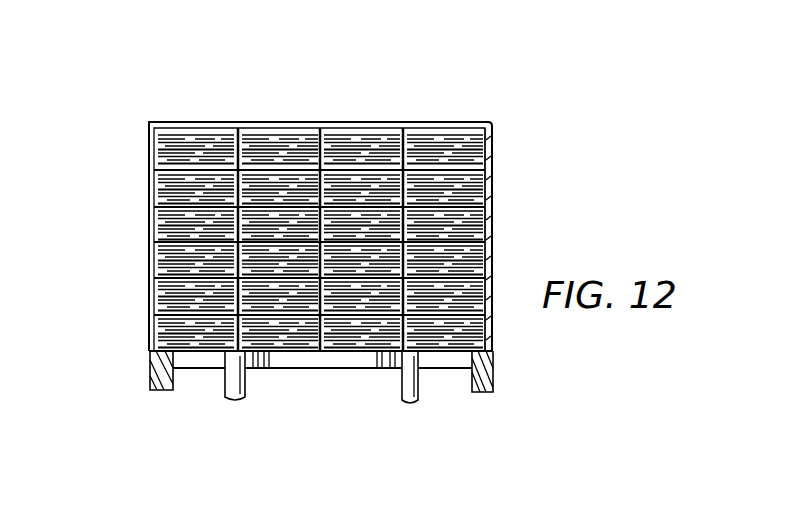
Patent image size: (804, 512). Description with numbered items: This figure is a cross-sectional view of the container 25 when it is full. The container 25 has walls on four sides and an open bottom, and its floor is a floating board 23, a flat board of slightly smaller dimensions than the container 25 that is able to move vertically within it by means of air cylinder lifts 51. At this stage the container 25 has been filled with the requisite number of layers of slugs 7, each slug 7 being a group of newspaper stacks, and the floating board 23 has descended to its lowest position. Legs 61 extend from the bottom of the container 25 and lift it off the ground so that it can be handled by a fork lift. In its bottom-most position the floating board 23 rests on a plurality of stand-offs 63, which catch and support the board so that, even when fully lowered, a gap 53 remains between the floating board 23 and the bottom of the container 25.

The slug 7 is at (442, 130).
The container 25 is at (496, 188).
The floating board 23 is at (198, 352).
The air cylinder lift 51 is at (401, 390).
The gap 53 is at (440, 360).
The leg 61 is at (495, 382).
The stand-off 63 is at (153, 360).